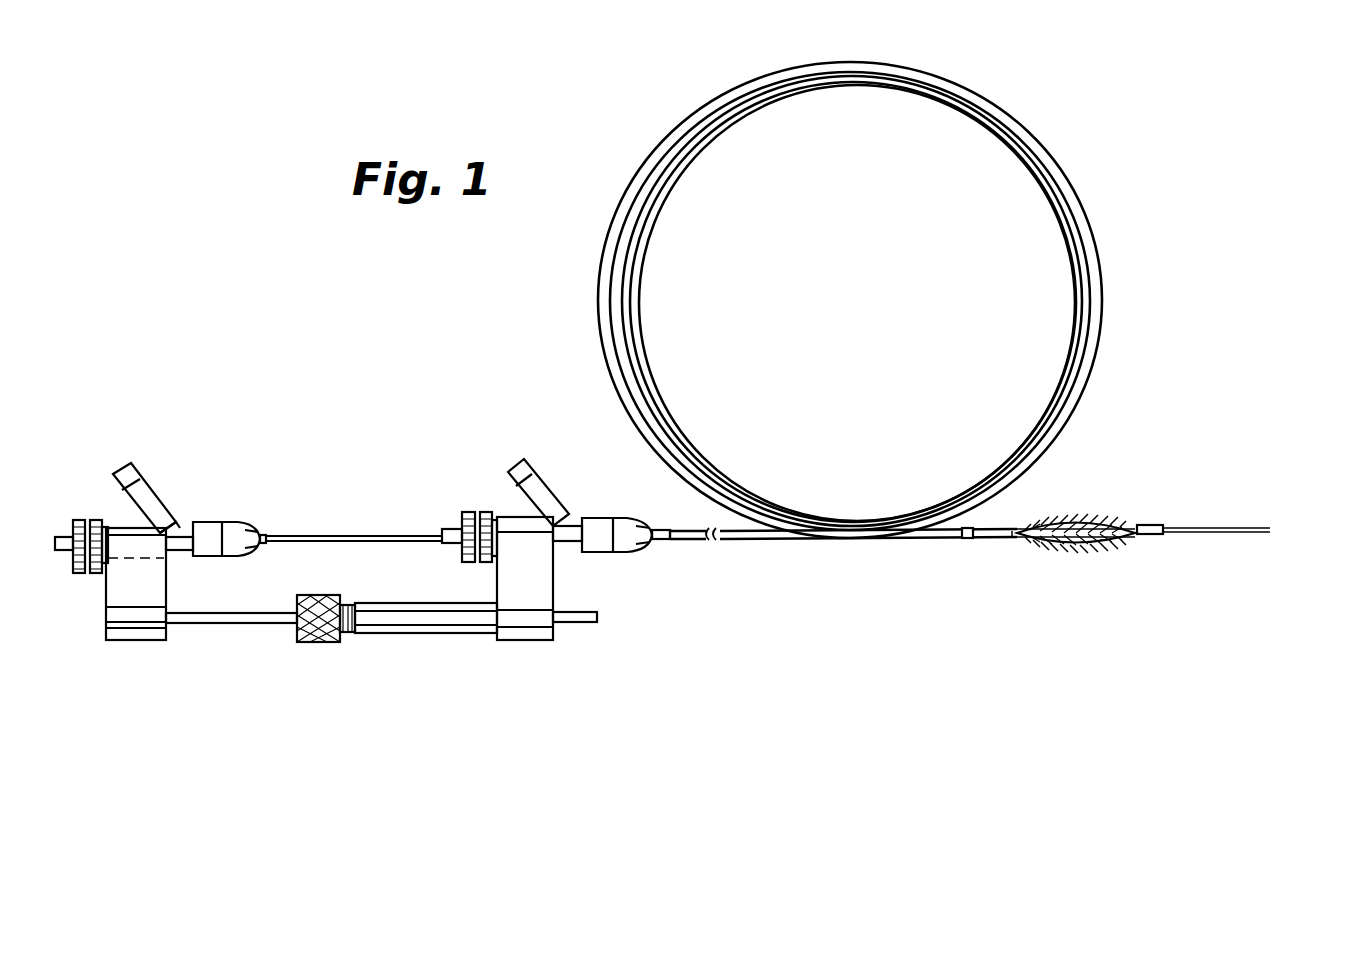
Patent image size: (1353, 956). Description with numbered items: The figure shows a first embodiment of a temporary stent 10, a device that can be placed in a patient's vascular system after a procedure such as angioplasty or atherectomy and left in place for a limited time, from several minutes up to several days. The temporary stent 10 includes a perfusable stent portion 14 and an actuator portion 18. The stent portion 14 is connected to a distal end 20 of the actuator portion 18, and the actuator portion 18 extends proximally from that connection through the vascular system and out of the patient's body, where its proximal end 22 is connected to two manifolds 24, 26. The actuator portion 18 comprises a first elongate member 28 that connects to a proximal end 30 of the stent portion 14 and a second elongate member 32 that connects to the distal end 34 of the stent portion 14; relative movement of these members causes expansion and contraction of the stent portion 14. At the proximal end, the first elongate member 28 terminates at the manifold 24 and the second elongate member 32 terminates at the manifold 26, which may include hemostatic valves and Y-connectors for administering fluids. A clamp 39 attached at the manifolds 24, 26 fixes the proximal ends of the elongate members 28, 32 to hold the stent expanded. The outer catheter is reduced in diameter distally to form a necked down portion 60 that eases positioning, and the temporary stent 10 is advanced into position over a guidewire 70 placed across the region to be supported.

The temporary stent 10 is at (868, 612).
The perfusable stent portion 14 is at (1103, 517).
The actuator portion 18 is at (763, 540).
The distal end of the actuator portion 20 is at (1003, 523).
The proximal end of the actuator portion 22 is at (655, 553).
The manifold 24 is at (621, 517).
The manifold 26 is at (220, 522).
The first elongate member 28 is at (947, 540).
The proximal end of the stent portion 30 is at (1011, 548).
The second elongate member 32 is at (1105, 540).
The distal end of the stent portion 34 is at (1138, 523).
The clamp 39 is at (393, 635).
The necked down portion 60 is at (975, 540).
The guidewire 70 is at (1237, 528).